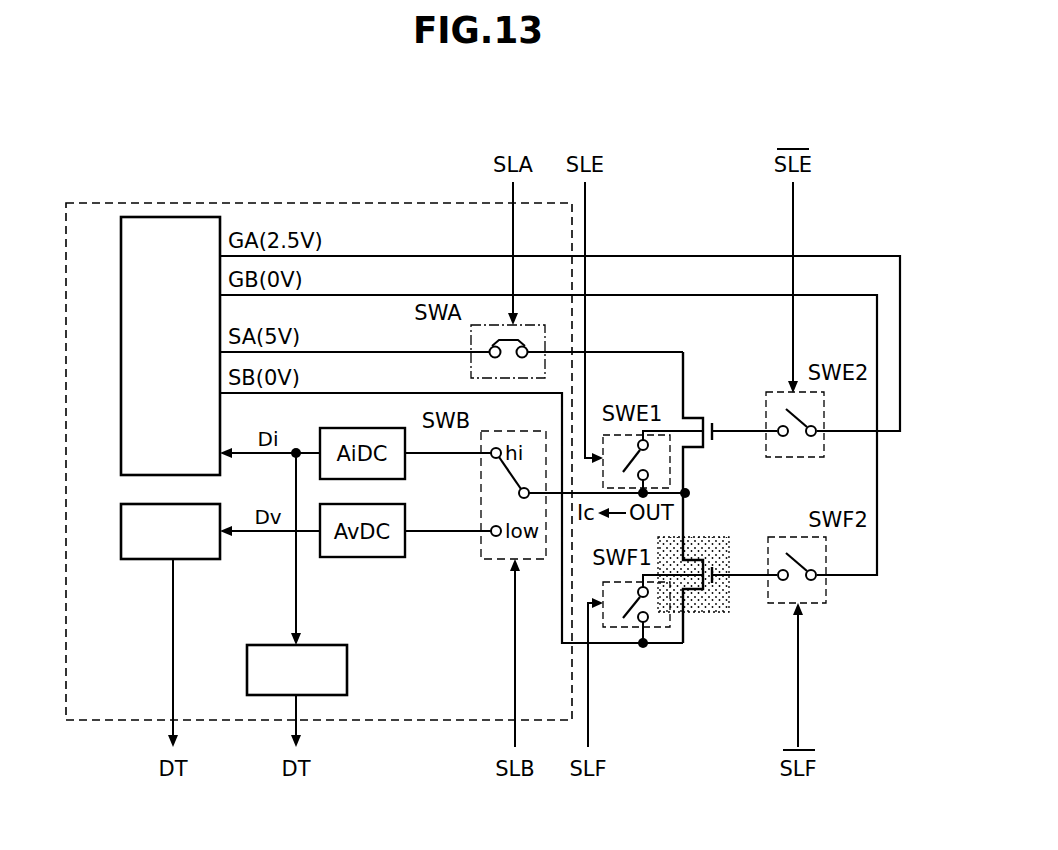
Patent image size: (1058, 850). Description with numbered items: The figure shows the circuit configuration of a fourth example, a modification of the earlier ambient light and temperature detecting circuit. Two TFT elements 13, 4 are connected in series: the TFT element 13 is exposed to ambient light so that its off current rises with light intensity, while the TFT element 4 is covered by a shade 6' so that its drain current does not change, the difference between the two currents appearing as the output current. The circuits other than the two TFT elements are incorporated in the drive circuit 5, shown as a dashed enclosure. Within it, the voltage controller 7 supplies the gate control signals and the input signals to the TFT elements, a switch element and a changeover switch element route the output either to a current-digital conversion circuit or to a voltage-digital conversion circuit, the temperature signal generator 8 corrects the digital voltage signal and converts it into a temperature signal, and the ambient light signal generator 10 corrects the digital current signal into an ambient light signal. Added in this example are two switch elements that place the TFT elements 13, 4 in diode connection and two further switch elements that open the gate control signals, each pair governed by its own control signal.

The drive circuit 5 is at (290, 203).
The voltage controller 7 is at (121, 325).
The temperature signal generator 8 is at (121, 524).
The ambient light signal generator 10 is at (323, 645).
The TFT element 13 is at (703, 418).
The TFT element 4 is at (698, 555).
The shade 6' is at (730, 581).